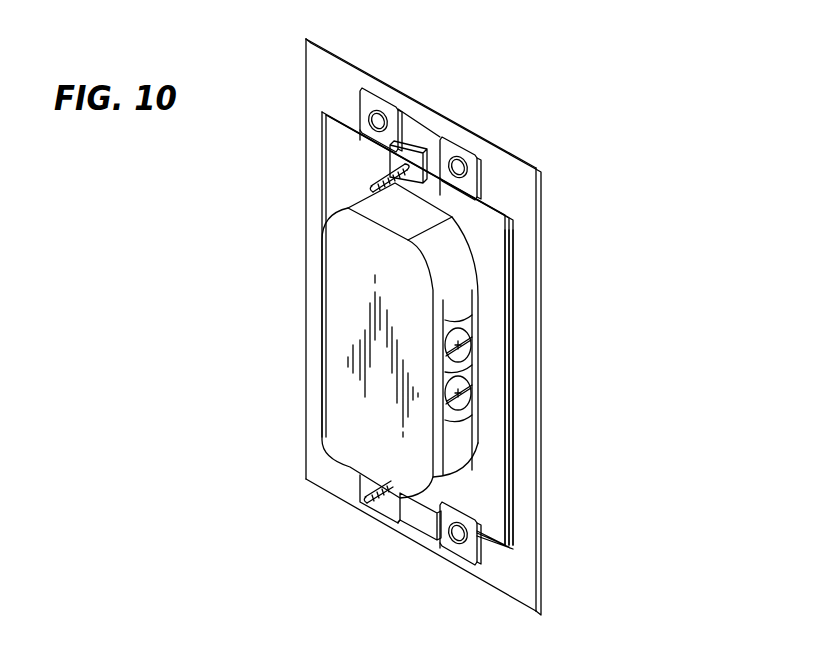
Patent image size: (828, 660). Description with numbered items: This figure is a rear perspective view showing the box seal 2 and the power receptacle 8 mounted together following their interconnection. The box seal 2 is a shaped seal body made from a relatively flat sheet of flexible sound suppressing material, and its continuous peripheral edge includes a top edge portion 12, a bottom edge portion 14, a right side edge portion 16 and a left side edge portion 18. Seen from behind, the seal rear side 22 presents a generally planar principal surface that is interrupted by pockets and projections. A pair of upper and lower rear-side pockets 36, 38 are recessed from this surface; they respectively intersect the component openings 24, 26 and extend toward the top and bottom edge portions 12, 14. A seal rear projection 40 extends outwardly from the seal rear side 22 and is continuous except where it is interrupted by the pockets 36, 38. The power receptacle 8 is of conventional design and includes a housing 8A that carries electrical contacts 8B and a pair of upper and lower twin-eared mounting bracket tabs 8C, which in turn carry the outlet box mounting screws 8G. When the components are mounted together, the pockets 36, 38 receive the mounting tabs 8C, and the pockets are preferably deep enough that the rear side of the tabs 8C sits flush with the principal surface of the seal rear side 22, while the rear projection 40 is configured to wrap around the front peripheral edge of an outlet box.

The box seal 2 is at (545, 148).
The power receptacle 8 is at (305, 516).
The housing 8A is at (345, 330).
The electrical contacts 8B is at (447, 330).
The twin-eared mounting bracket tabs 8C is at (455, 158).
The outlet box mounting screws 8G is at (372, 187).
The top edge portion 12 is at (368, 72).
The bottom edge portion 14 is at (490, 585).
The right side edge portion 16 is at (305, 292).
The left side edge portion 18 is at (540, 385).
The seal rear side 22 is at (518, 195).
The component opening 24 is at (466, 254).
The component opening 26 is at (462, 447).
The upper rear-side pocket 36 is at (418, 135).
The lower rear-side pocket 38 is at (418, 512).
The seal rear projection 40 is at (512, 330).